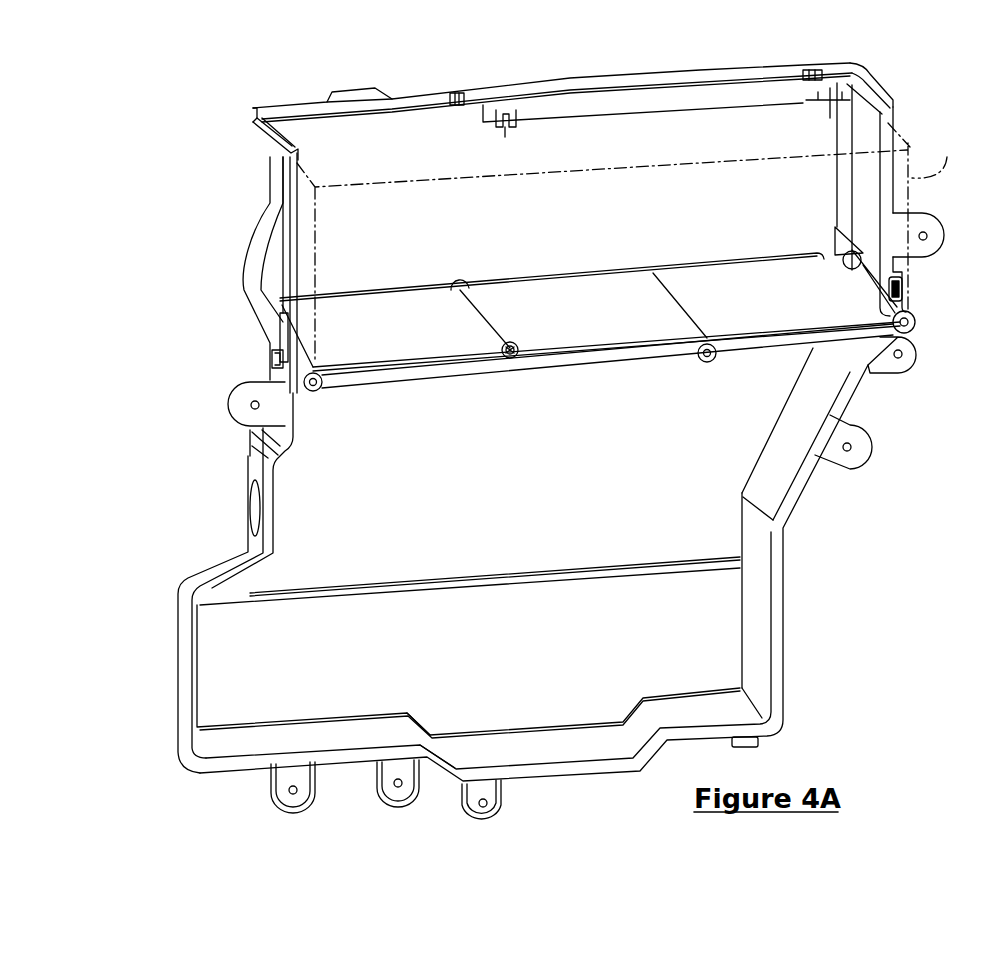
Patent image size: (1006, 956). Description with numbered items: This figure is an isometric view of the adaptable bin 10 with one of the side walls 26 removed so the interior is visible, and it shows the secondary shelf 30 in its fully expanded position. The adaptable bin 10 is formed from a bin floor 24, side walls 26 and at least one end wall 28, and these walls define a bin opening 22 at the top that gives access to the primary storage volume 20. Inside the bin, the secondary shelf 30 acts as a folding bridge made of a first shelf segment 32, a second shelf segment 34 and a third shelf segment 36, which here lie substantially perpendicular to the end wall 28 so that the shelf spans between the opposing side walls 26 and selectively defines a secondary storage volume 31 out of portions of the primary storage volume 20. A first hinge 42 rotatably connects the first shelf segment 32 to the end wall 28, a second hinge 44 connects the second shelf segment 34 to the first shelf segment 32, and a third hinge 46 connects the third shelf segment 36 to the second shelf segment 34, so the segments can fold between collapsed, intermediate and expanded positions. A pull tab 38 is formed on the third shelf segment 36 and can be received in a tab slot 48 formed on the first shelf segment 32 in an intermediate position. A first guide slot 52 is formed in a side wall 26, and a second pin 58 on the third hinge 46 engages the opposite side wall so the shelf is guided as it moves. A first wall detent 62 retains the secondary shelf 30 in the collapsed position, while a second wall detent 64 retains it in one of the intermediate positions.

The adaptable bin 10 is at (94, 146).
The primary storage volume 20 is at (319, 140).
The bin opening 22 is at (866, 70).
The bin floor 24 is at (532, 745).
The side walls 26 is at (471, 585).
The end wall 28 is at (262, 472).
The secondary shelf 30 is at (930, 300).
The secondary storage volume 31 is at (947, 157).
The first shelf segment 32 is at (752, 278).
The second shelf segment 34 is at (511, 292).
The third shelf segment 36 is at (362, 318).
The pull tab 38 is at (285, 328).
The first hinge 42 is at (928, 352).
The second hinge 44 is at (727, 376).
The third hinge 46 is at (448, 281).
The tab slot 48 is at (690, 296).
The first guide slot 52 is at (578, 272).
The second pin 58 is at (512, 358).
The first wall detent 62 is at (812, 82).
The second wall detent 64 is at (458, 106).